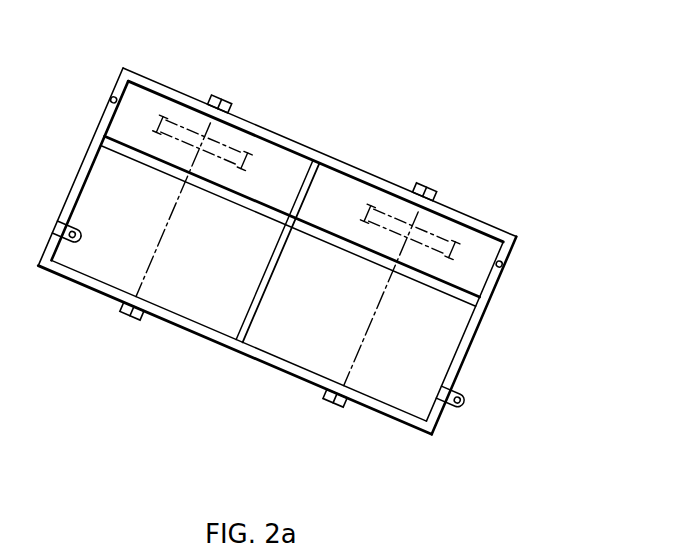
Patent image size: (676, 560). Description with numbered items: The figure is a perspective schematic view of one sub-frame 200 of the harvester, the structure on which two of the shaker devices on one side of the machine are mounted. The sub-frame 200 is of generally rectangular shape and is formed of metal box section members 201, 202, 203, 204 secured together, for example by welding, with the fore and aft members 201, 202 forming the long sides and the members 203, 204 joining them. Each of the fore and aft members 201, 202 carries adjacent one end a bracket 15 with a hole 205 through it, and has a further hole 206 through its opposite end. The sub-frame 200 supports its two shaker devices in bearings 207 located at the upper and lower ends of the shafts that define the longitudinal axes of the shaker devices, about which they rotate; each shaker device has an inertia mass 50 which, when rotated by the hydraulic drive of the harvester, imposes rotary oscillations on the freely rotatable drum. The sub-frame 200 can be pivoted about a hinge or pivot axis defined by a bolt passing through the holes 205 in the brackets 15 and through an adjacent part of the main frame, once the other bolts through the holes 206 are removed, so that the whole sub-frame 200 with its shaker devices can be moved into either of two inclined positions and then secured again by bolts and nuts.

The sub-frame 200 is at (483, 219).
The fore and aft member 201 is at (468, 351).
The fore and aft member 202 is at (75, 188).
The box section member 203 is at (277, 137).
The box section member 204 is at (188, 334).
The hole 205 is at (77, 226).
The hole 206 is at (112, 100).
The bearing 207 is at (227, 102).
The inertia mass 50 is at (183, 124).
The bracket 15 is at (76, 236).